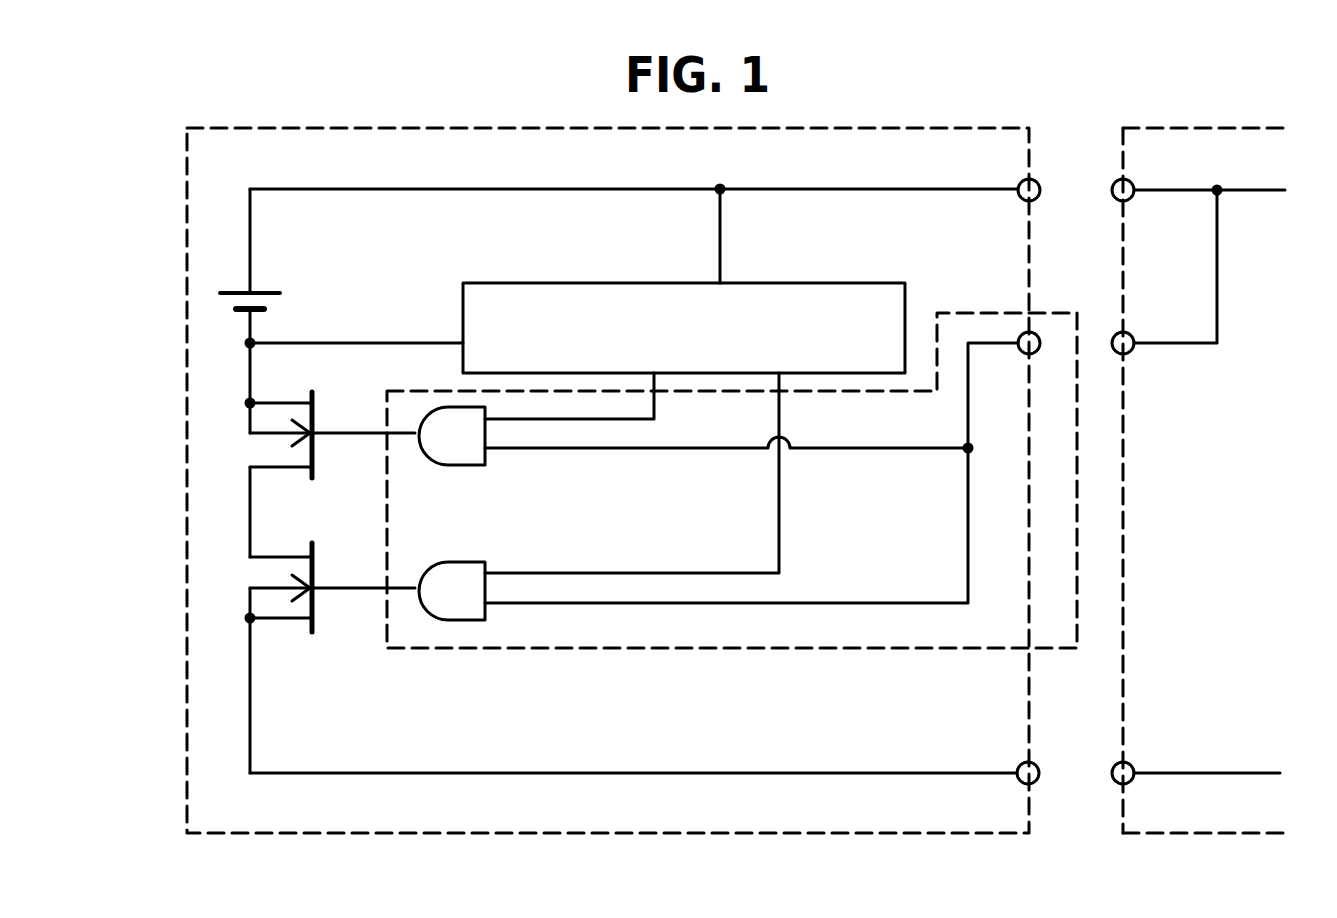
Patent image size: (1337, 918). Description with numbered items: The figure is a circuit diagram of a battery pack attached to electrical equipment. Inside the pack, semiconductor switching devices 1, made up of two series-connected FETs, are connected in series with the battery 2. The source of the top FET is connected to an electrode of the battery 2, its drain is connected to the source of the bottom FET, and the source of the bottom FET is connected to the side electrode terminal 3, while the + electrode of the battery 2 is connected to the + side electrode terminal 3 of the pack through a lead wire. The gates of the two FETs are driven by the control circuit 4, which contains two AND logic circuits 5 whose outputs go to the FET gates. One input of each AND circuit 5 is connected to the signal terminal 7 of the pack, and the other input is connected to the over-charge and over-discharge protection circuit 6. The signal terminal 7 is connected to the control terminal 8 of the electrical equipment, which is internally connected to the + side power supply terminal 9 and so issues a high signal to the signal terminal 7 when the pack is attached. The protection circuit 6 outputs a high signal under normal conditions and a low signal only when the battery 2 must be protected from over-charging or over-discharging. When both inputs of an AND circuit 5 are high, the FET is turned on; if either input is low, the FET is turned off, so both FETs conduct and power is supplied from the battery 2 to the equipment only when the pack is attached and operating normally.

The semiconductor switching devices 1 is at (222, 523).
The battery 2 is at (267, 293).
The electrode terminal 3 is at (1035, 186).
The control circuit 4 is at (603, 650).
The AND logic circuits 5 is at (463, 455).
The over-charge and over-discharge protection circuit 6 is at (856, 300).
The signal terminal 7 is at (1034, 338).
The control terminal 8 is at (1130, 349).
The + side power supply terminal 9 is at (1128, 186).